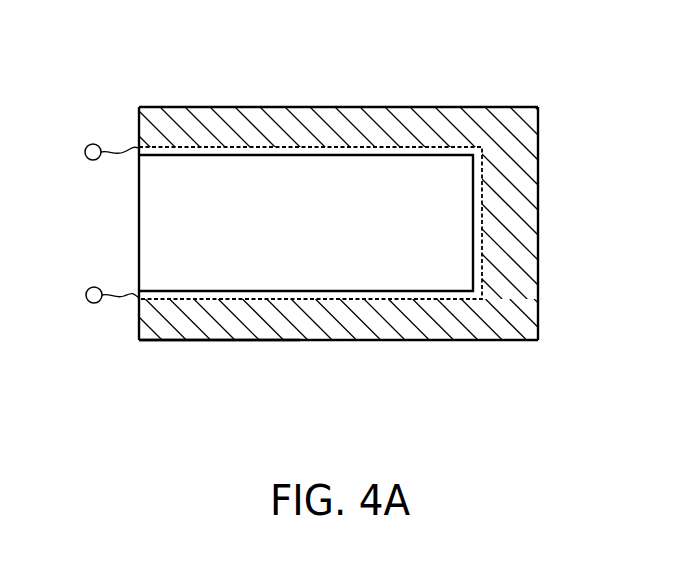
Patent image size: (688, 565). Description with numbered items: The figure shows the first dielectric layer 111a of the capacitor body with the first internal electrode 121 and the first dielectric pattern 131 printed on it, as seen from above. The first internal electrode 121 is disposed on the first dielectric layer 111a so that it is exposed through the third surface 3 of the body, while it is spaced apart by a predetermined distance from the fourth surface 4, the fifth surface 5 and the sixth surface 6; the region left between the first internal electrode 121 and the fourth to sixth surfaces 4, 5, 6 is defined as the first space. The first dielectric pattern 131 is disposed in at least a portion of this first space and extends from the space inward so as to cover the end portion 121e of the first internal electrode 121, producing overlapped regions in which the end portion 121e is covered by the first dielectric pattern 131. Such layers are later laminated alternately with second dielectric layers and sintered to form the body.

The third surface 3 is at (136, 222).
The fourth surface 4 is at (540, 250).
The fifth surface 5 is at (452, 340).
The sixth surface 6 is at (420, 108).
The first dielectric layer 111a is at (218, 341).
The first internal electrode 121 is at (403, 280).
The end portion of the first internal electrode 121e is at (483, 203).
The first dielectric pattern 131 is at (329, 322).